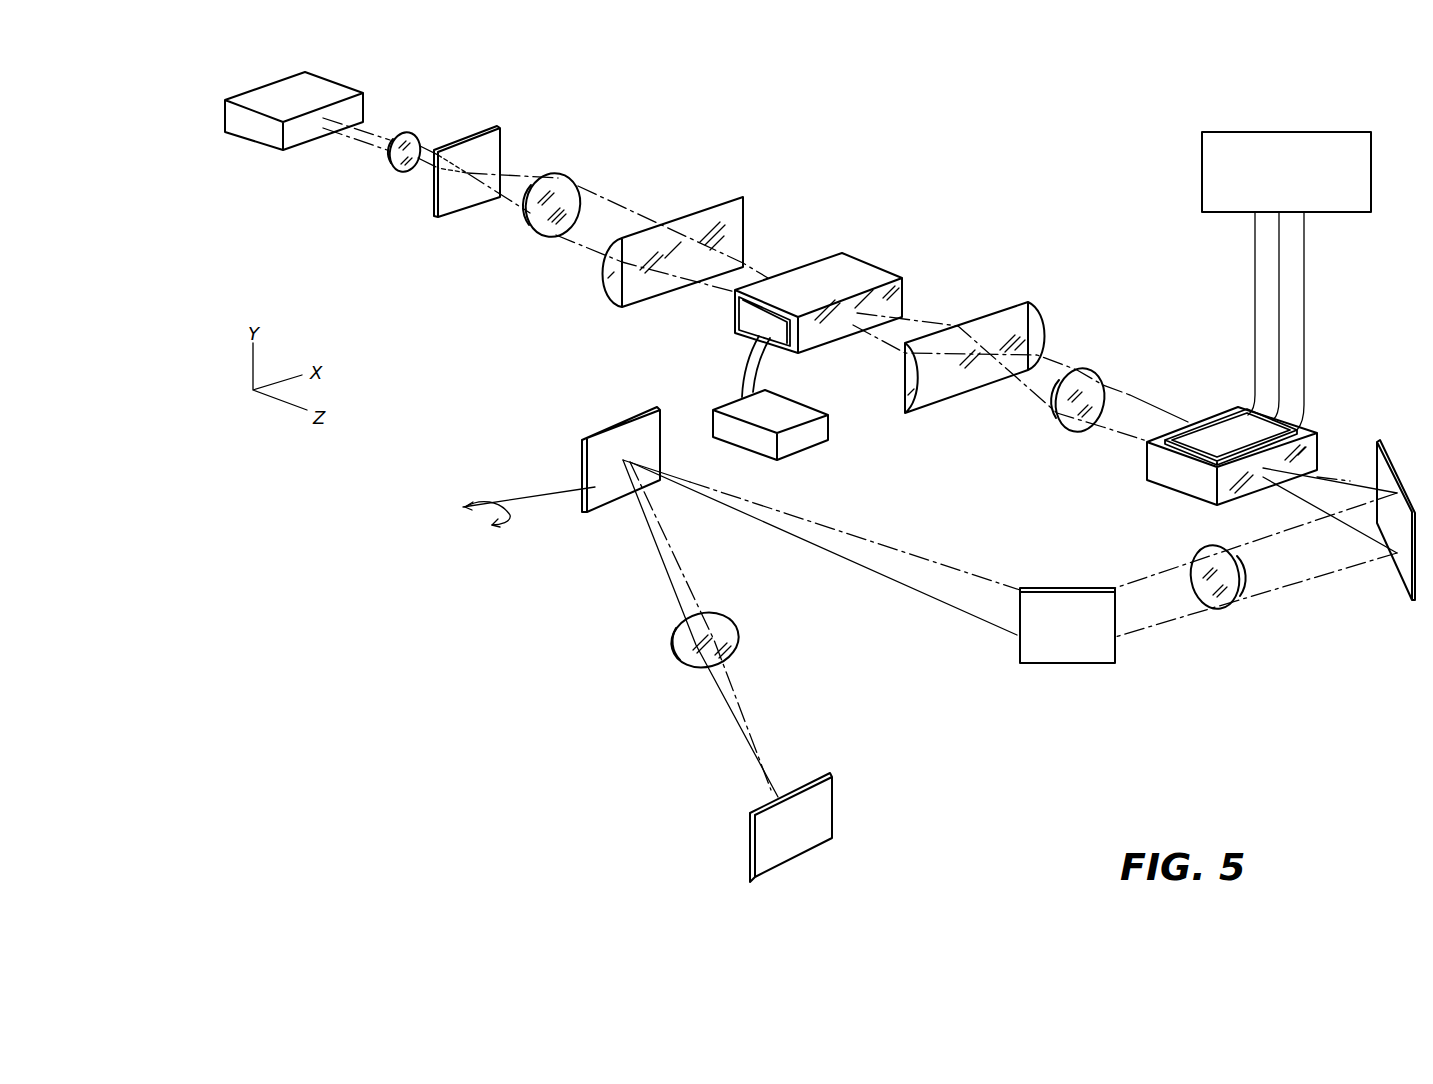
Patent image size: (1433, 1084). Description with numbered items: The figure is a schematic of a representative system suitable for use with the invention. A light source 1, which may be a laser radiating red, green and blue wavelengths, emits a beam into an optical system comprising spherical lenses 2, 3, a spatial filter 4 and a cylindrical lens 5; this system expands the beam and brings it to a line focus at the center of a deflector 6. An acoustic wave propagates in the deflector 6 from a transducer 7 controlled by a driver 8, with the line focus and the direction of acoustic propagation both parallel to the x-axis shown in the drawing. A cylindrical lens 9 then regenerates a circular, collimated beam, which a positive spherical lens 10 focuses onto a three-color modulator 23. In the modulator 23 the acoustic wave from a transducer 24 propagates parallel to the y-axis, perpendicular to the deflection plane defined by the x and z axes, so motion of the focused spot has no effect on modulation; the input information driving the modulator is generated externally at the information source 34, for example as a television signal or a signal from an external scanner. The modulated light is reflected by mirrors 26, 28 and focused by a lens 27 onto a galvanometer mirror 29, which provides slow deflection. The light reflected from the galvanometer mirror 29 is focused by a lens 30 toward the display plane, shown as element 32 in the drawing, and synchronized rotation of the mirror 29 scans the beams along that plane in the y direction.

The light source 1 is at (325, 83).
The spherical lens 2 is at (408, 142).
The spatial filter 4 is at (497, 131).
The spherical lens 3 is at (556, 178).
The cylindrical lens 5 is at (713, 205).
The deflector 6 is at (843, 263).
The transducer 7 is at (748, 323).
The driver 8 is at (823, 428).
The cylindrical lens 9 is at (990, 323).
The positive spherical lens 10 is at (1078, 382).
The information source 34 is at (1202, 158).
The transducer 24 is at (1223, 425).
The 3-color modulator 23 is at (1158, 472).
The mirror 26 is at (1392, 562).
The lens 27 is at (1233, 602).
The mirror 28 is at (1075, 653).
The galvanometer mirror 29 is at (585, 488).
The lens 30 is at (680, 647).
The mirror / screen 32 is at (763, 837).